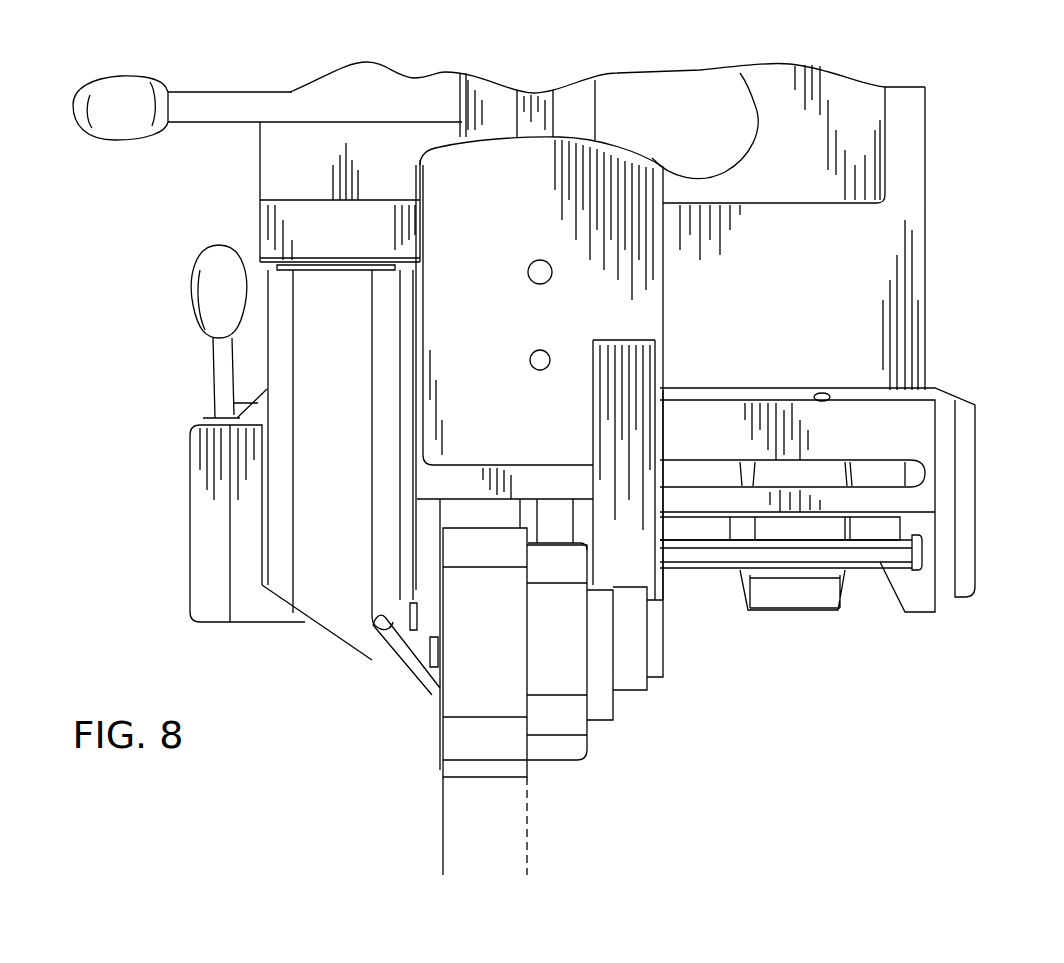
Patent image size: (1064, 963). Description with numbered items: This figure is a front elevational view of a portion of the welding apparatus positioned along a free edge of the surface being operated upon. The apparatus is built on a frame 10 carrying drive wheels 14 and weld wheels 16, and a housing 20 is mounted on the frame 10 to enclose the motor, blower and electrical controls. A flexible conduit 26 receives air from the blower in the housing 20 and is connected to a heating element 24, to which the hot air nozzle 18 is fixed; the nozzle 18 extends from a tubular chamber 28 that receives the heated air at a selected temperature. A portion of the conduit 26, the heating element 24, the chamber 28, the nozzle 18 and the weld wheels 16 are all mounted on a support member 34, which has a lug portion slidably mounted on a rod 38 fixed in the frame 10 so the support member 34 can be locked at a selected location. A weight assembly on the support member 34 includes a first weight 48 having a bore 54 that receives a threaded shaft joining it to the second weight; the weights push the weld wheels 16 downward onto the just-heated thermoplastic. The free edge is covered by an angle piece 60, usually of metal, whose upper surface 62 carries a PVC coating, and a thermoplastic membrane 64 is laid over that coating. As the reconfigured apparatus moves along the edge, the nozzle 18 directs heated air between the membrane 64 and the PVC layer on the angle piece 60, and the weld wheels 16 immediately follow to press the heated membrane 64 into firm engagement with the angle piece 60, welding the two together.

The frame 10 is at (913, 436).
The drive wheels 14 is at (793, 600).
The weld wheels 16 is at (469, 663).
The hot air nozzle 18 is at (402, 675).
The housing 20 is at (776, 305).
The heating element 24 is at (324, 243).
The flexible conduit 26 is at (703, 131).
The tubular chamber 28 is at (321, 443).
The support member 34 is at (523, 455).
The rod 38 is at (868, 558).
The first weight 48 is at (526, 205).
The bore 54 is at (532, 271).
The angle piece 60 is at (528, 806).
The upper surface 62 is at (487, 820).
The thermoplastic membrane 64 is at (609, 838).